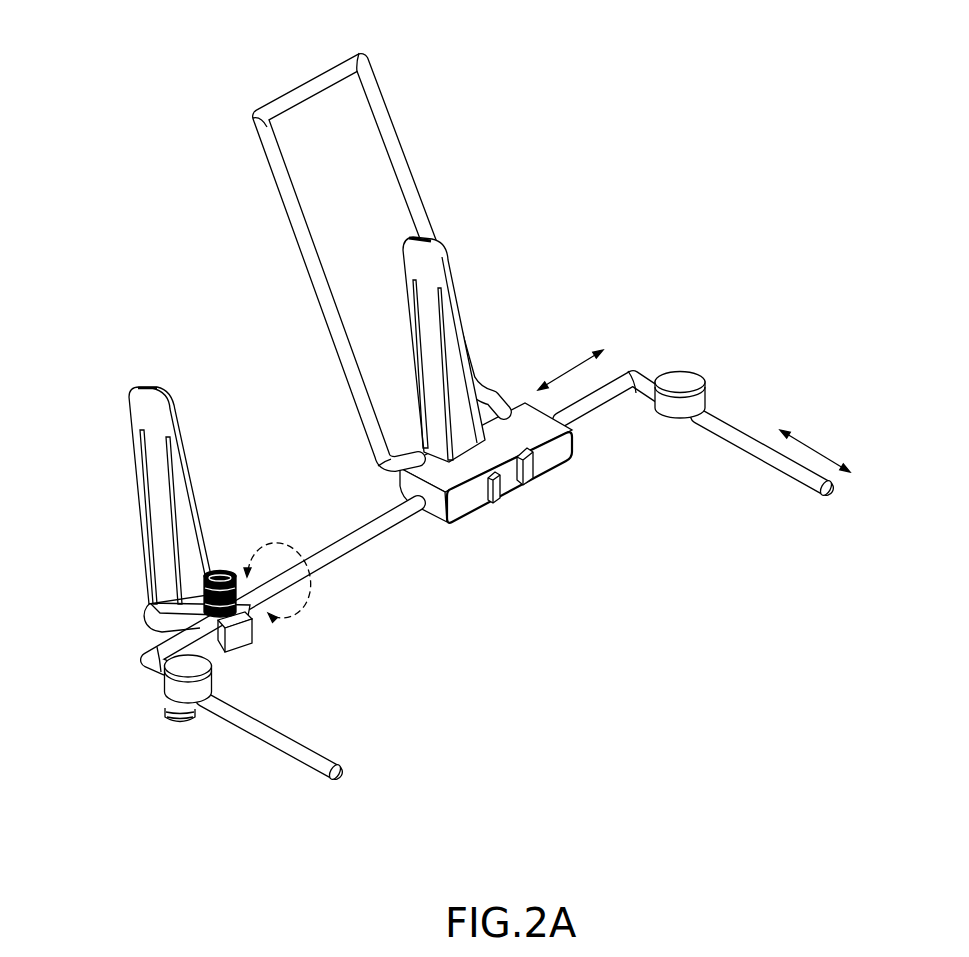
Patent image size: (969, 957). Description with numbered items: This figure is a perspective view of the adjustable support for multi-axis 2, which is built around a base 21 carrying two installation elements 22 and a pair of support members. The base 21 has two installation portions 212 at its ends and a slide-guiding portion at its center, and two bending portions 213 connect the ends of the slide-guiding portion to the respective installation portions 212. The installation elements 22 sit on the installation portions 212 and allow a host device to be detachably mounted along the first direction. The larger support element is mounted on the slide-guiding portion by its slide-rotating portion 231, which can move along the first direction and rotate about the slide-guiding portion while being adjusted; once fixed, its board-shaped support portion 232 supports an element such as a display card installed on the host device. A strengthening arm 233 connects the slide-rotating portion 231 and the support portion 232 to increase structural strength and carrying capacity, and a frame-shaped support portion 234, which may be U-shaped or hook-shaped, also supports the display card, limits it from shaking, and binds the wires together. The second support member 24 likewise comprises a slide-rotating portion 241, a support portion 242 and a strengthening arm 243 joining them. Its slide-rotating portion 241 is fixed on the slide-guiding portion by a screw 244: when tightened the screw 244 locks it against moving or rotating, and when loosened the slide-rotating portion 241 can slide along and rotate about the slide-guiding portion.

The adjustable support for multi-axis 2 is at (158, 88).
The base 21 is at (449, 395).
The installation portion 212 is at (740, 437).
The bending portion 213 is at (633, 373).
The installation element 22 is at (660, 418).
The slide-rotating portion 231 is at (447, 473).
The support portion 232 is at (428, 268).
The strengthening arm 233 is at (452, 377).
The support portion 234 is at (310, 88).
The support member 24 is at (213, 493).
The slide-rotating portion 241 is at (240, 635).
The support portion 242 is at (150, 418).
The strengthening arm 243 is at (160, 543).
The screw 244 is at (217, 568).